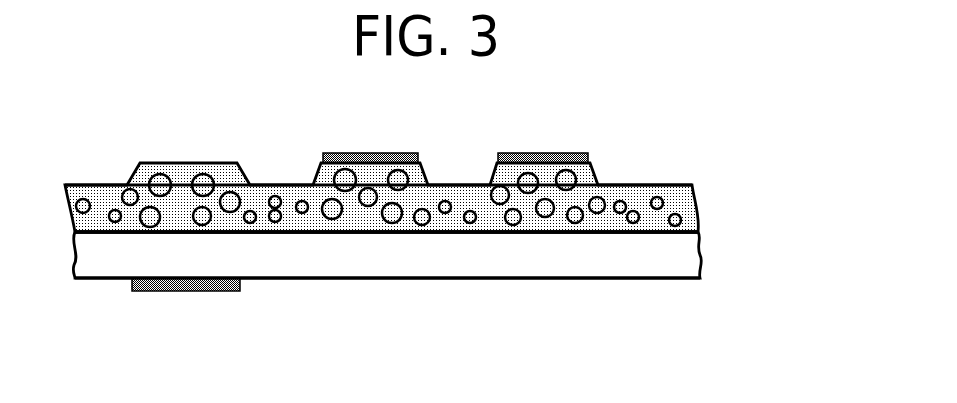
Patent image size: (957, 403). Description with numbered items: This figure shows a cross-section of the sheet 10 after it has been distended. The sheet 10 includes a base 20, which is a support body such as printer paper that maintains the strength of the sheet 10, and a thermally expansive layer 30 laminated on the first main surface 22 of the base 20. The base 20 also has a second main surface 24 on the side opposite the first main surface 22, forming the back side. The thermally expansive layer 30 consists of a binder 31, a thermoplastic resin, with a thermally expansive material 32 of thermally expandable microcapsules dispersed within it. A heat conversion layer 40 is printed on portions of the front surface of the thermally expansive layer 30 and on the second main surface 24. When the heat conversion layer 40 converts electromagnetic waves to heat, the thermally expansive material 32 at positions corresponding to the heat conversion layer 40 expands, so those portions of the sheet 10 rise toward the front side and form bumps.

The sheet 10 is at (681, 171).
The base 20 is at (678, 262).
The first main surface 22 is at (86, 233).
The second main surface 24 is at (100, 278).
The thermally expansive layer 30 is at (802, 178).
The binder 31 is at (677, 196).
The thermally expansive material 32 is at (687, 218).
The heat conversion layer 40 is at (400, 152).